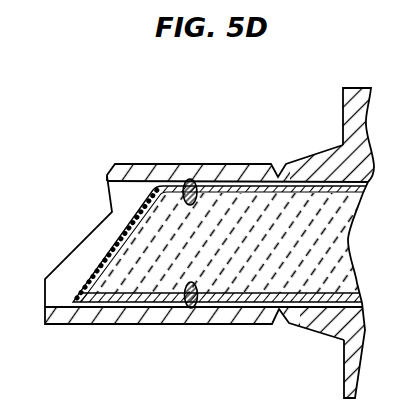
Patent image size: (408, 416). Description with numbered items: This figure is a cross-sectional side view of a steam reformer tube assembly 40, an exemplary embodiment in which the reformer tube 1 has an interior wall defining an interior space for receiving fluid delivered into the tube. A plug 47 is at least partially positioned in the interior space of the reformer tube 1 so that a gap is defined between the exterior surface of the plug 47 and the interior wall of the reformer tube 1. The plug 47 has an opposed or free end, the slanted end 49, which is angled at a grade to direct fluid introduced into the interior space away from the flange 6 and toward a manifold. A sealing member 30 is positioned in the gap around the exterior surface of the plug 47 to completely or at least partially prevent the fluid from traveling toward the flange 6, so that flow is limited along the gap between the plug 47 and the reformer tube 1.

The steam reformer tube assembly 40 is at (117, 109).
The reformer tube 1 is at (160, 163).
The flange 6 is at (366, 88).
The sealing member 30 is at (190, 178).
The plug 47 is at (150, 242).
The slanted end 49 is at (98, 270).